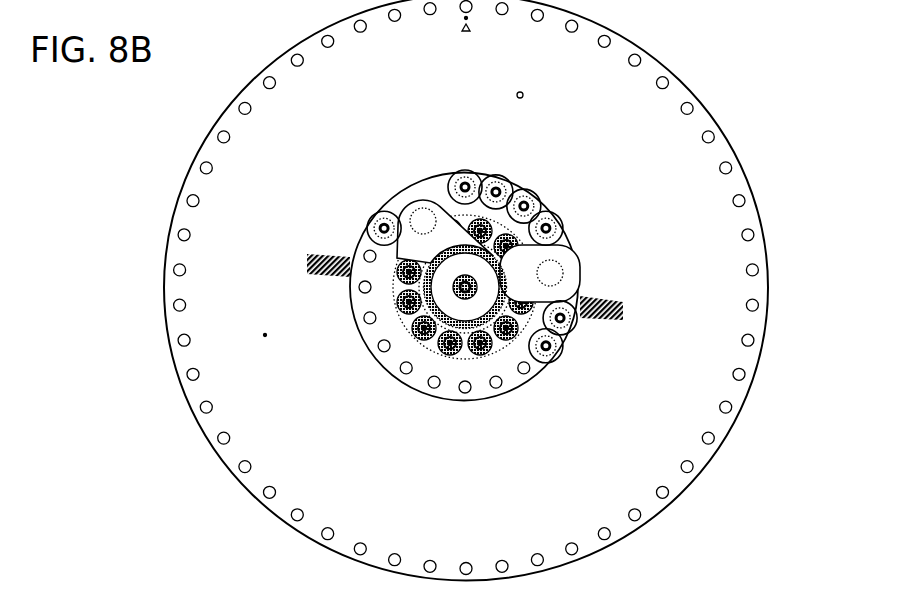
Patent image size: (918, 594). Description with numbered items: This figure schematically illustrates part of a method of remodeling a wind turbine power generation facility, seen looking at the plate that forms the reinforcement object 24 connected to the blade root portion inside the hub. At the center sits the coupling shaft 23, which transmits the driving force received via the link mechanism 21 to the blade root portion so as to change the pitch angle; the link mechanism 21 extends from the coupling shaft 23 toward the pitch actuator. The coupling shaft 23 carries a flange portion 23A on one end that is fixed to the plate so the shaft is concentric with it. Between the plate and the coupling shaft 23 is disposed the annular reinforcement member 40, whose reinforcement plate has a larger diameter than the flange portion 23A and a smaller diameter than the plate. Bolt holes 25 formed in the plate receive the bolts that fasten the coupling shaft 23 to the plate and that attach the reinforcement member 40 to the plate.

The link mechanism 21 is at (407, 199).
The coupling shaft 23 is at (496, 286).
The flange portion 23A is at (498, 226).
The reinforcement object 24 is at (638, 482).
The bolt holes 25 is at (490, 400).
The reinforcement member 40 is at (497, 310).